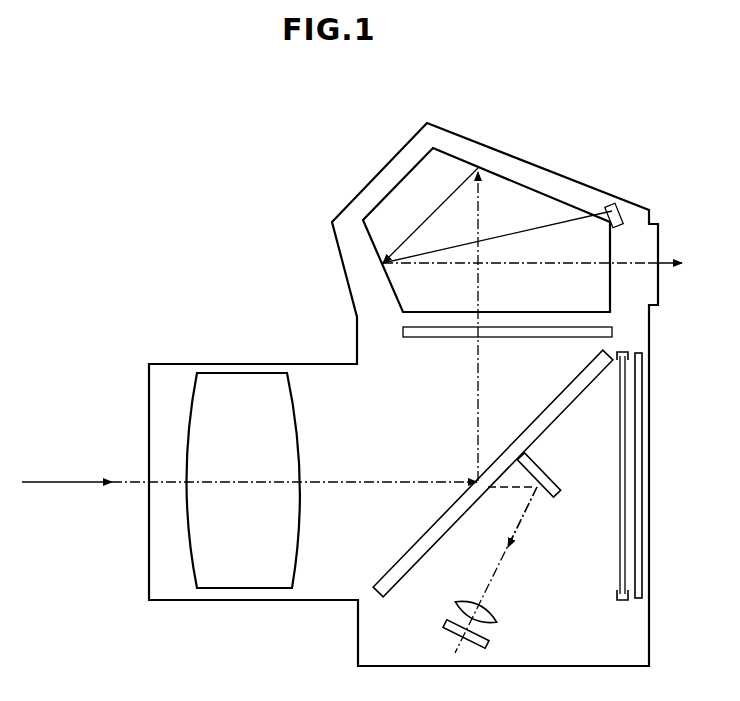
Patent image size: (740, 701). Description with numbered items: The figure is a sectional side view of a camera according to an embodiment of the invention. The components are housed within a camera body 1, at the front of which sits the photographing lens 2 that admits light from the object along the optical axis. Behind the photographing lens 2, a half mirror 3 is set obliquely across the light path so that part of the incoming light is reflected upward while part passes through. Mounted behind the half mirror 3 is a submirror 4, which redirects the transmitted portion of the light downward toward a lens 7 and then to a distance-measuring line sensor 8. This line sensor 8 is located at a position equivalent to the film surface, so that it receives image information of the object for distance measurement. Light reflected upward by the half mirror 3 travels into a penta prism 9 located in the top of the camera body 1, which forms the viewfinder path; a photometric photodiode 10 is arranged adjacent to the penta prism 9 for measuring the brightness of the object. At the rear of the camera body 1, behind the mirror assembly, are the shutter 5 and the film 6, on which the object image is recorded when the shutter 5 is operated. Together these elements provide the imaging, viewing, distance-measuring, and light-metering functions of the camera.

The camera body 1 is at (347, 205).
The photographing lens 2 is at (253, 580).
The half mirror 3 is at (447, 522).
The submirror 4 is at (535, 473).
The shutter 5 is at (620, 450).
The film 6 is at (642, 477).
The lens 7 is at (485, 617).
The distance-measuring line sensor 8 is at (483, 633).
The penta prism 9 is at (505, 195).
The photometric photodiode 10 is at (619, 205).